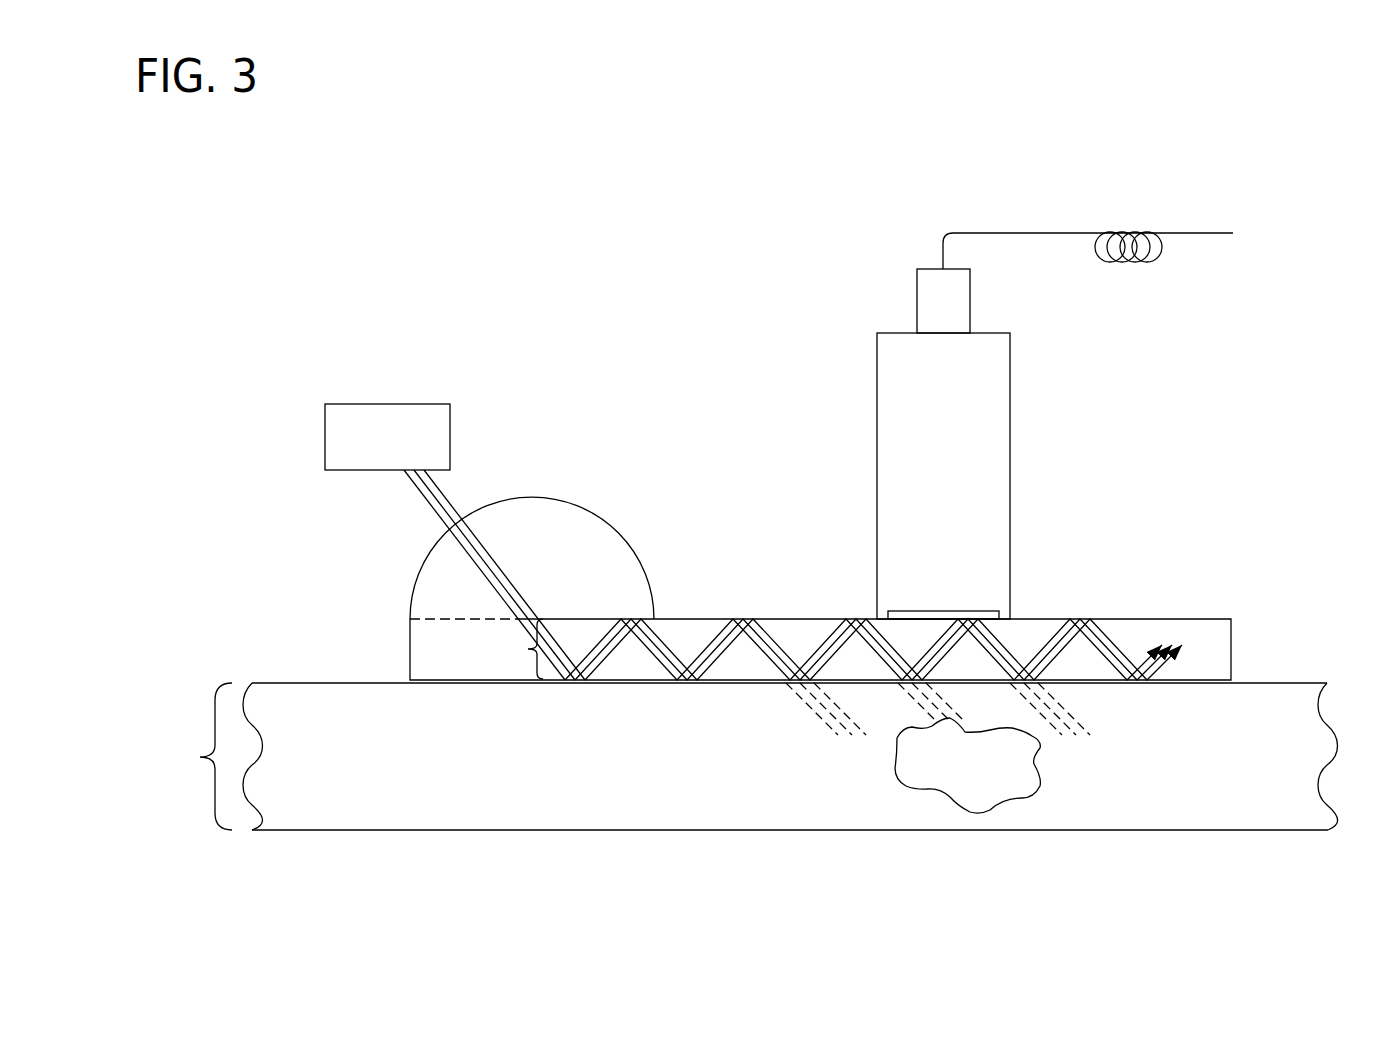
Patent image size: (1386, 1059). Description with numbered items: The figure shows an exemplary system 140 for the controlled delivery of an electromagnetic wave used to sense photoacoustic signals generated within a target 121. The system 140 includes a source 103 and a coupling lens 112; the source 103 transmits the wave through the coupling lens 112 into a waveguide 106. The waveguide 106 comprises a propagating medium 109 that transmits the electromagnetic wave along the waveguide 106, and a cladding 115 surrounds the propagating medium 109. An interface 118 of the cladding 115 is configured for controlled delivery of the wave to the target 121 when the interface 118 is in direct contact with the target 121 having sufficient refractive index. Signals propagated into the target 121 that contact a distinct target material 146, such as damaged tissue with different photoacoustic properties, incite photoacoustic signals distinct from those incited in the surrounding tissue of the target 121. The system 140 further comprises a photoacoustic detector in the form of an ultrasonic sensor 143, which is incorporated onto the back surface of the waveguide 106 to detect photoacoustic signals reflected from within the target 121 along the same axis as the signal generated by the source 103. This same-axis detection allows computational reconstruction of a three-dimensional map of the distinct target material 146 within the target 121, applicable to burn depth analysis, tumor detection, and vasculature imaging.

The source 103 is at (392, 400).
The waveguide 106 is at (507, 649).
The propagating medium 109 is at (1198, 648).
The coupling lens 112 is at (580, 545).
The cladding 115 is at (1247, 617).
The interface 118 is at (594, 690).
The target 121 is at (742, 756).
The system 140 is at (683, 205).
The ultrasonic sensor 143 is at (1017, 448).
The distinct target material 146 is at (898, 783).